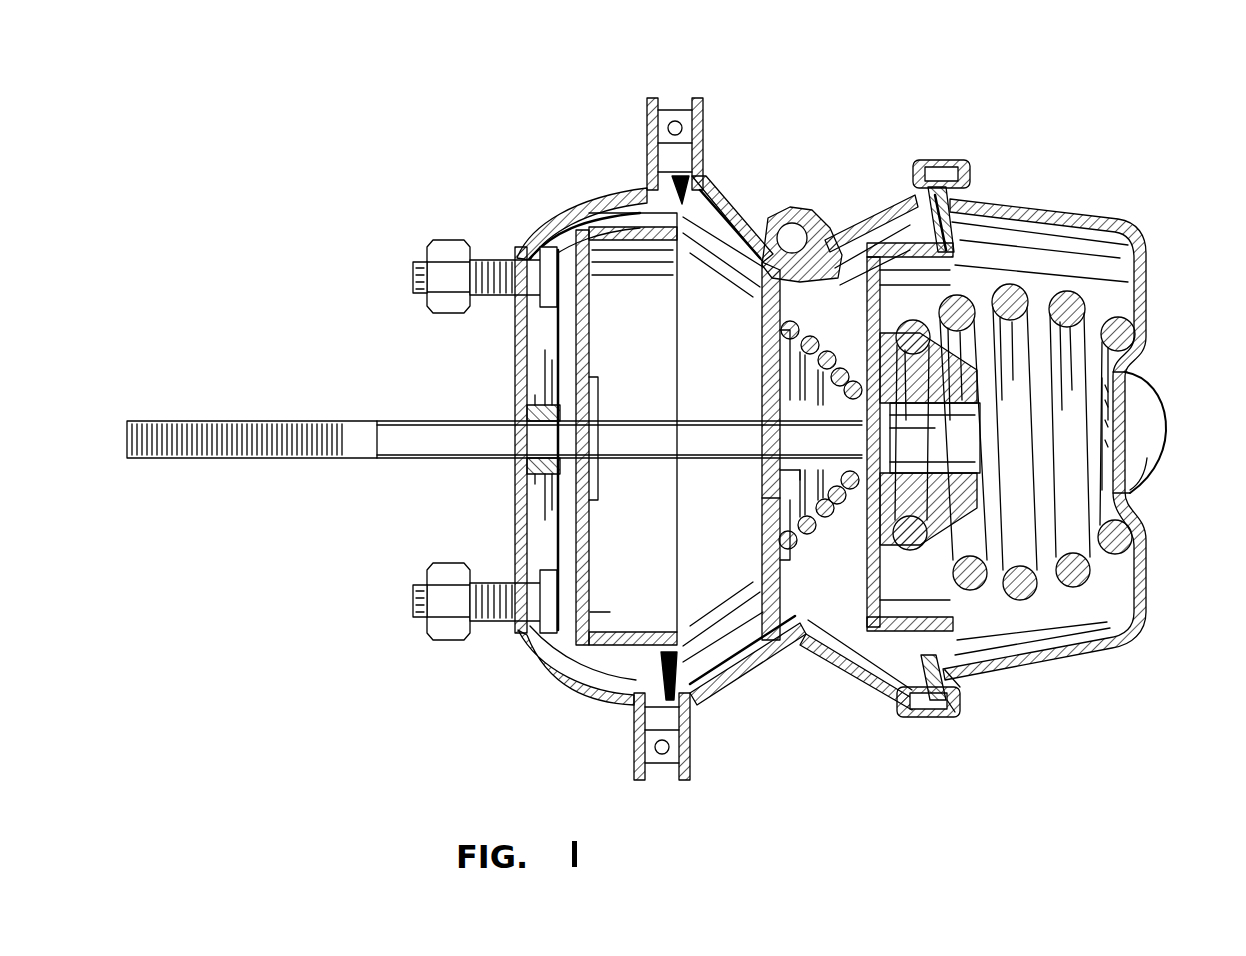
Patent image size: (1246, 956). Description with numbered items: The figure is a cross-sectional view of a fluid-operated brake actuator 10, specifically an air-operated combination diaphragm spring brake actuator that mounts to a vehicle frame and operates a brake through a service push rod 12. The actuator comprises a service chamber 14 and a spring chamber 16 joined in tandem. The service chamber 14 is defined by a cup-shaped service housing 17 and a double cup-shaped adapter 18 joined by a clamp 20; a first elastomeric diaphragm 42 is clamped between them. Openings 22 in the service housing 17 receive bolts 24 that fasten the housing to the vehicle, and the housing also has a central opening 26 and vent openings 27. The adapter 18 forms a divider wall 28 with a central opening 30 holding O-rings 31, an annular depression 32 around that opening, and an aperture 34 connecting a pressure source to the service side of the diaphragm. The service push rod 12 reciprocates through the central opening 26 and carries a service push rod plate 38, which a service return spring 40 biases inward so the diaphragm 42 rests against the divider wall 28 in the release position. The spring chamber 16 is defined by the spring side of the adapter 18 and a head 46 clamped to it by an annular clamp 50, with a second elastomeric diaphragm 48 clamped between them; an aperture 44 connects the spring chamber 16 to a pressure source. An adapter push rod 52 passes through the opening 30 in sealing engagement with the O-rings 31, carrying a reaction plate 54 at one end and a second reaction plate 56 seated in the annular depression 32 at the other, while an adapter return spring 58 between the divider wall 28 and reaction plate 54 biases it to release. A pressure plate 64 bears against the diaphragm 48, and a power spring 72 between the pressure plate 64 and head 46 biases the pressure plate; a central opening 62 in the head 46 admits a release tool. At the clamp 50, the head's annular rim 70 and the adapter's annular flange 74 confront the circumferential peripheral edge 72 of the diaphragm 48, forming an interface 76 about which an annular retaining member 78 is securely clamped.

The fluid-operated brake actuator 10 is at (835, 115).
The service push rod 12 is at (355, 432).
The service chamber 14 is at (578, 198).
The spring chamber 16 is at (1018, 202).
The service housing 17 is at (548, 663).
The adapter 18 is at (745, 215).
The clamp 20 is at (700, 112).
The openings 22 is at (523, 258).
The bolts 24 is at (487, 300).
The central opening 26 is at (512, 418).
The vent openings 27 is at (583, 680).
The divider wall 28 is at (762, 290).
The central opening 30 is at (757, 402).
The O-rings 31 is at (778, 470).
The annular depression 32 is at (765, 498).
The aperture 34 is at (725, 668).
The service push rod plate 38 is at (572, 350).
The service return spring 40 is at (528, 493).
The first elastomeric diaphragm 42 is at (585, 298).
The aperture 44 is at (848, 658).
The head 46 is at (1098, 220).
The second elastomeric diaphragm 48 is at (948, 236).
The annular clamp 50 is at (930, 155).
The adapter push rod 52 is at (662, 438).
The reaction plate 54 is at (865, 368).
The second reaction plate 56 is at (592, 402).
The adapter return spring 58 is at (830, 530).
The central opening 62 is at (1150, 425).
The pressure plate 64 is at (890, 305).
The annular rim 70 is at (960, 688).
The power spring 72 is at (1020, 600).
The annular flange 74 is at (895, 700).
The interface 76 is at (940, 718).
The annular retaining member 78 is at (905, 716).